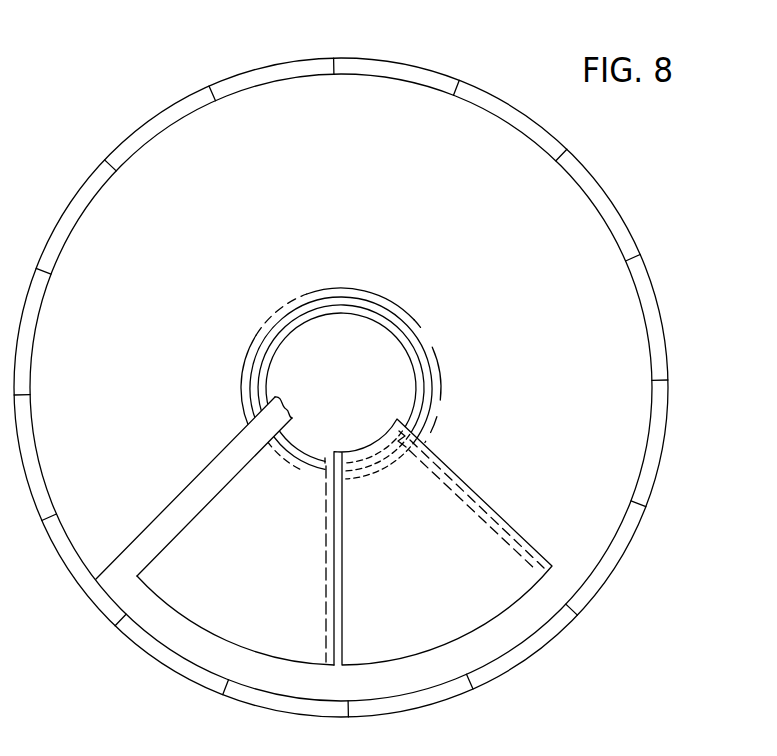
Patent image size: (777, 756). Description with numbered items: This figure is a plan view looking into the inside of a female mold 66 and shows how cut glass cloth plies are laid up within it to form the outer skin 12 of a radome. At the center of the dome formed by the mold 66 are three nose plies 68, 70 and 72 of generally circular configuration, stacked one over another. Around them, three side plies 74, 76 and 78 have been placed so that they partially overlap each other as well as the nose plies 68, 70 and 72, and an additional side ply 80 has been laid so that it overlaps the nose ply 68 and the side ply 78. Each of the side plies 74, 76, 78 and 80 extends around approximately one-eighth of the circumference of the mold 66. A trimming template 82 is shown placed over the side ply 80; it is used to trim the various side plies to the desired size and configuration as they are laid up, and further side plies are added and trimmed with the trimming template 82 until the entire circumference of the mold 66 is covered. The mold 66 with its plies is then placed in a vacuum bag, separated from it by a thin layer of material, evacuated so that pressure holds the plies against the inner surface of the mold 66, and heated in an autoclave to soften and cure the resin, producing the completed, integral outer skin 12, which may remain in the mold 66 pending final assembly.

The outer skin 12 is at (471, 640).
The female mold 66 is at (613, 557).
The nose ply 68 is at (424, 344).
The nose ply 70 is at (389, 326).
The nose ply 72 is at (346, 323).
The side ply 74 is at (440, 461).
The side ply 76 is at (465, 483).
The side ply 78 is at (498, 518).
The side ply 80 is at (302, 453).
The trimming template 82 is at (216, 468).